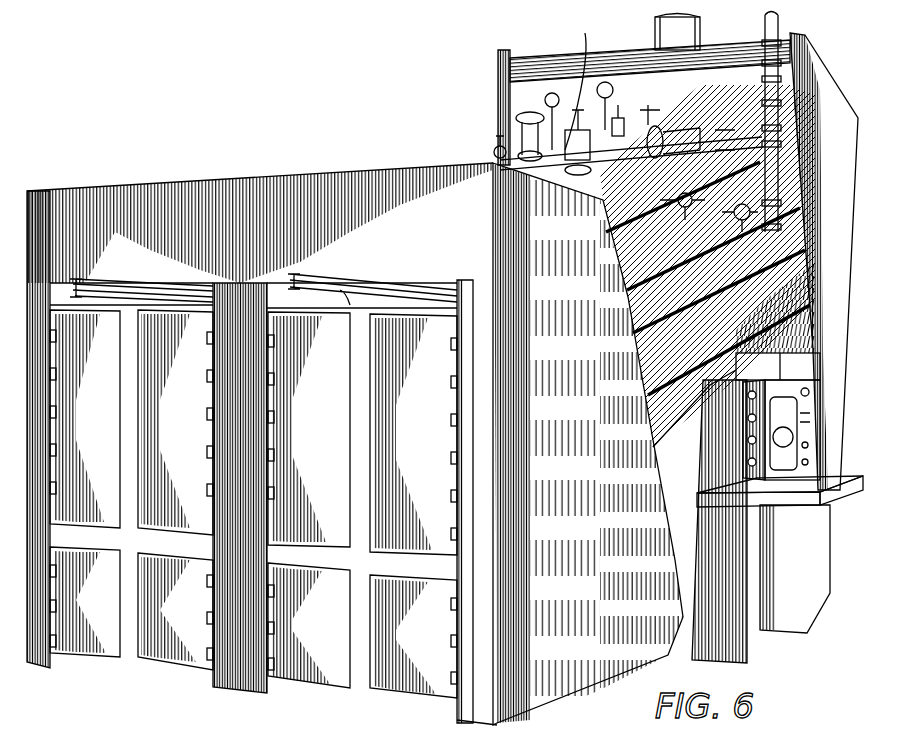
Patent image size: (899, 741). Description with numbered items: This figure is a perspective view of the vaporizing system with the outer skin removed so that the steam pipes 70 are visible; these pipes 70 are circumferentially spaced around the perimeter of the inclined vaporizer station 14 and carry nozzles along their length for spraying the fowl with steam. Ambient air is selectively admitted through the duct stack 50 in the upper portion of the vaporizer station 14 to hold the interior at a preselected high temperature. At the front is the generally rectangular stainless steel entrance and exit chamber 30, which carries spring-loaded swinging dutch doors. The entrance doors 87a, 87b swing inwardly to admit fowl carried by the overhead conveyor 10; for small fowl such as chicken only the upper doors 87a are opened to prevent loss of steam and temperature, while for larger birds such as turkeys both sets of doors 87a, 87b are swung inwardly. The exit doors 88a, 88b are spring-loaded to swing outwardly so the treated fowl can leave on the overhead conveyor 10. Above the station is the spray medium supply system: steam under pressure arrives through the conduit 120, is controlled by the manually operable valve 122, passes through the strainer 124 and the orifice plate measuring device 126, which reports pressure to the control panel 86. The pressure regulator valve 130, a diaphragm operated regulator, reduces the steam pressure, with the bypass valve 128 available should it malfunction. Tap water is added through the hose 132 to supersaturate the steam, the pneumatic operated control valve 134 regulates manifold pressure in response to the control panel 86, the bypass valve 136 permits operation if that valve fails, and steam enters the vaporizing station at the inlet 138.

The overhead conveyor 10 is at (124, 283).
The vaporizer station 14 is at (684, 445).
The entrance and exit chamber 30 is at (580, 440).
The duct stack 50 is at (691, 46).
The pipes 70 is at (670, 247).
The control panel 86 is at (818, 435).
The entrance doors 87a is at (323, 434).
The entrance doors 87b is at (321, 640).
The exit doors 88a is at (100, 421).
The exit doors 88b is at (100, 614).
The conduit 120 is at (778, 26).
The manually operable valve 122 is at (793, 113).
The strainer 124 is at (717, 133).
The orifice plate measuring device 126 is at (650, 118).
The bypass valve 128 is at (625, 115).
The pressure regulator valve 130 is at (583, 36).
The hose 132 is at (585, 33).
The pneumatic operated control valve 134 is at (530, 97).
The bypass valve 136 is at (500, 130).
The inlet 138 is at (472, 160).